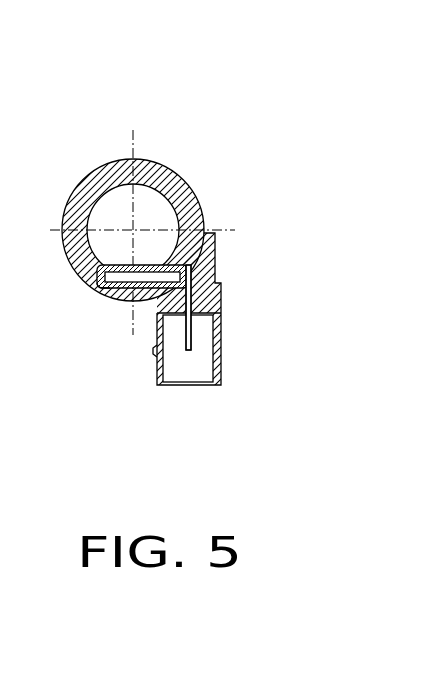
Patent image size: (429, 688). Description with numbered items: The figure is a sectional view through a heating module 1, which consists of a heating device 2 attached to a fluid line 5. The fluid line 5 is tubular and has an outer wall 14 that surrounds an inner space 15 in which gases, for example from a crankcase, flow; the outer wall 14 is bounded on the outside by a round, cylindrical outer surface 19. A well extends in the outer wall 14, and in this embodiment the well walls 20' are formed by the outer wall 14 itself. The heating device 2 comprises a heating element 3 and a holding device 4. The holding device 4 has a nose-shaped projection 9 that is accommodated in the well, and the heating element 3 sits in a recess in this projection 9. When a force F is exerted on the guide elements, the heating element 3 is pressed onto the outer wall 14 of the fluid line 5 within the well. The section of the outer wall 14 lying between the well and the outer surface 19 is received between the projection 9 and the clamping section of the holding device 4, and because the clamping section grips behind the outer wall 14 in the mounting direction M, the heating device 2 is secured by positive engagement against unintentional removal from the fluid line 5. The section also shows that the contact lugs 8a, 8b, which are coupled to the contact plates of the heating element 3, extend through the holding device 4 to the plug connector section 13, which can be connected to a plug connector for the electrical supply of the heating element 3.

The heating module 1 is at (298, 115).
The heating device 2 is at (270, 348).
The heating element 3 is at (143, 262).
The holding device 4 is at (225, 265).
The fluid line 5 is at (112, 140).
The contact lug 8a is at (190, 350).
The contact lug 8b is at (188, 307).
The nose-shaped projection 9 is at (100, 302).
The plug connector section 13 is at (175, 370).
The outer wall 14 is at (126, 180).
The inner space 15 is at (155, 202).
The outer surface 19 is at (68, 208).
The well walls 20' is at (65, 321).
The force F is at (128, 342).
The mounting direction M is at (415, 305).